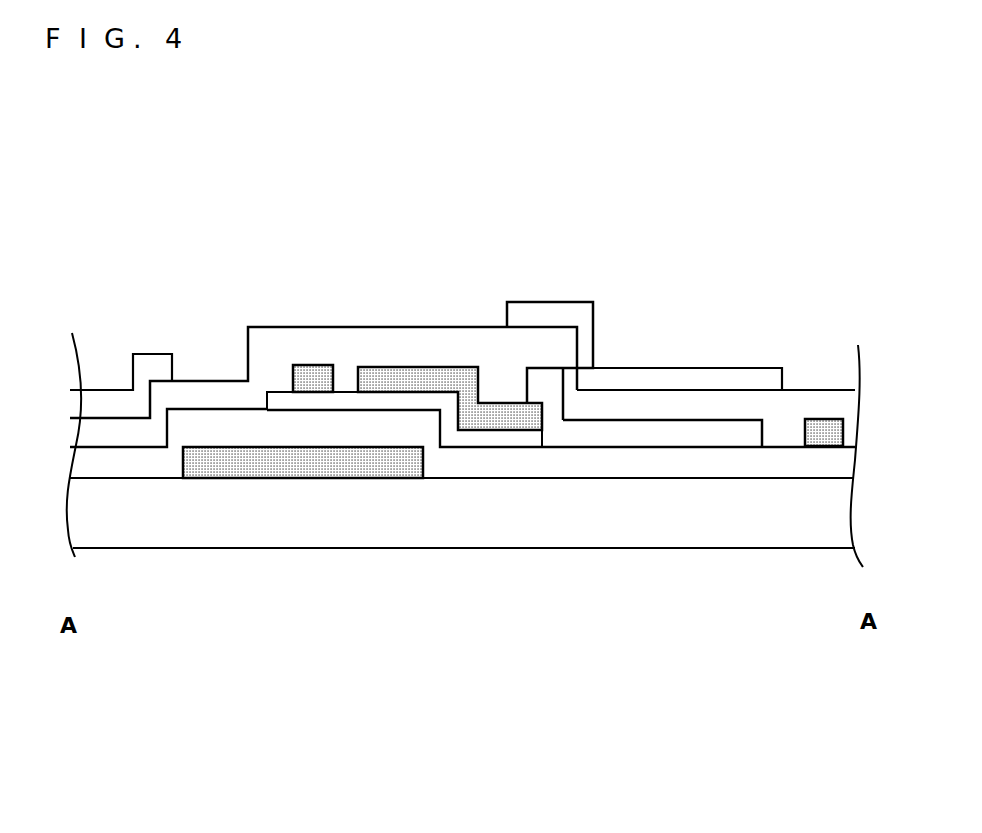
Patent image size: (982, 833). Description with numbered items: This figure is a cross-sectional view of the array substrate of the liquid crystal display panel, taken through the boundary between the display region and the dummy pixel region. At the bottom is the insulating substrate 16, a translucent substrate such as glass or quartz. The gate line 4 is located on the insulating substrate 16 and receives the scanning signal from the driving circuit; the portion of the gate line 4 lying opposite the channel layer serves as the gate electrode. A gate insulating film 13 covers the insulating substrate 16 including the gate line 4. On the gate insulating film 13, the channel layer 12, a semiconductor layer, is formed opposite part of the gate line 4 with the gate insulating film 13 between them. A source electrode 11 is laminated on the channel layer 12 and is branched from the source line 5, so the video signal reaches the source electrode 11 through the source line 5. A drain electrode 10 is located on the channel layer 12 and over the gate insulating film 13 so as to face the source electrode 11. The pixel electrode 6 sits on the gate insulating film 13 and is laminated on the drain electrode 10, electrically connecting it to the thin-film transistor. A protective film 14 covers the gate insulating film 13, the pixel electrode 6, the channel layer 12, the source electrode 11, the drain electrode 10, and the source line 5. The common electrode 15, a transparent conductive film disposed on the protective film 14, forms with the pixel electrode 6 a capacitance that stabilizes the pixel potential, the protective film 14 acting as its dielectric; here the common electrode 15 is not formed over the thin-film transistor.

The gate line 4 is at (350, 463).
The source line 5 is at (818, 428).
The pixel electrode 6 is at (670, 432).
The drain electrode 10 is at (453, 378).
The source electrode 11 is at (310, 378).
The channel layer 12 is at (283, 403).
The gate insulating film 13 is at (378, 430).
The protective film 14 is at (388, 348).
The common electrode 15 is at (142, 373).
The insulating substrate 16 is at (152, 517).